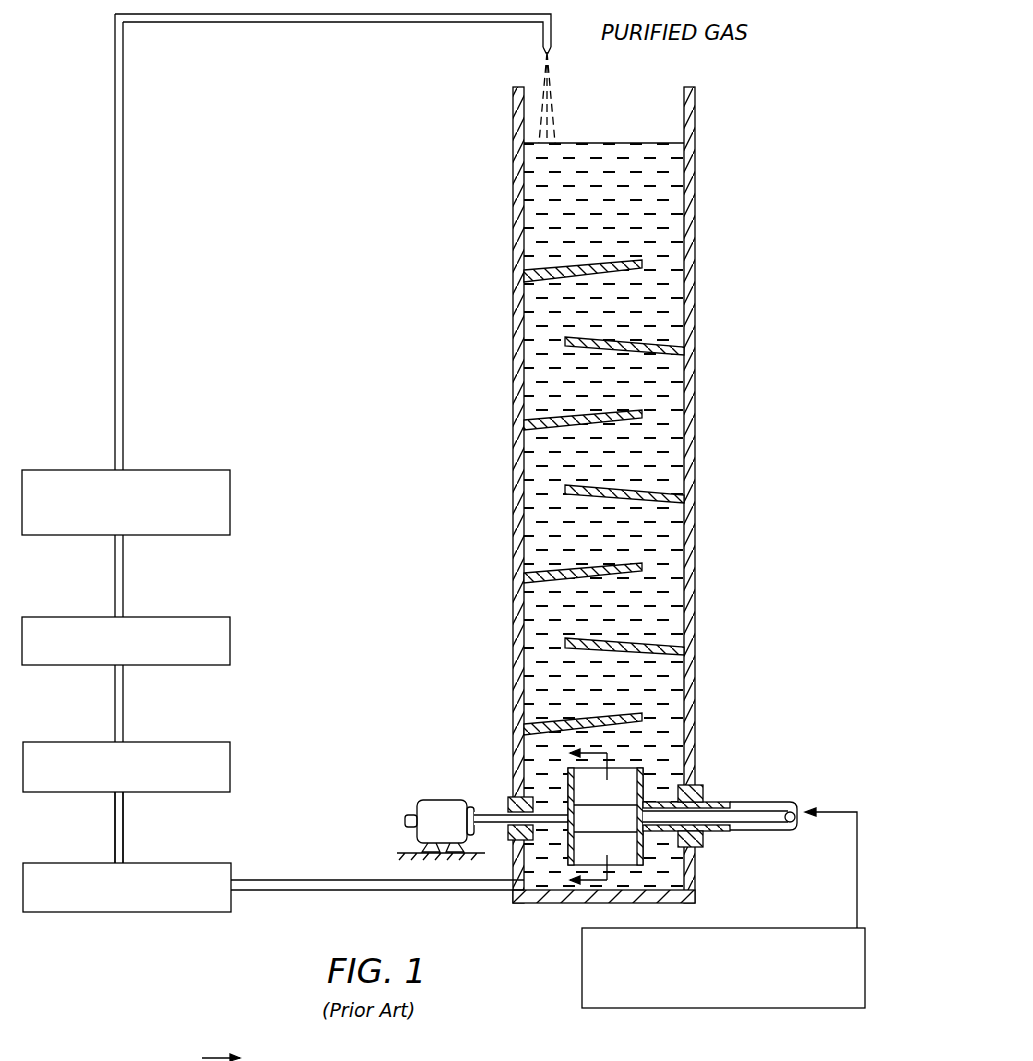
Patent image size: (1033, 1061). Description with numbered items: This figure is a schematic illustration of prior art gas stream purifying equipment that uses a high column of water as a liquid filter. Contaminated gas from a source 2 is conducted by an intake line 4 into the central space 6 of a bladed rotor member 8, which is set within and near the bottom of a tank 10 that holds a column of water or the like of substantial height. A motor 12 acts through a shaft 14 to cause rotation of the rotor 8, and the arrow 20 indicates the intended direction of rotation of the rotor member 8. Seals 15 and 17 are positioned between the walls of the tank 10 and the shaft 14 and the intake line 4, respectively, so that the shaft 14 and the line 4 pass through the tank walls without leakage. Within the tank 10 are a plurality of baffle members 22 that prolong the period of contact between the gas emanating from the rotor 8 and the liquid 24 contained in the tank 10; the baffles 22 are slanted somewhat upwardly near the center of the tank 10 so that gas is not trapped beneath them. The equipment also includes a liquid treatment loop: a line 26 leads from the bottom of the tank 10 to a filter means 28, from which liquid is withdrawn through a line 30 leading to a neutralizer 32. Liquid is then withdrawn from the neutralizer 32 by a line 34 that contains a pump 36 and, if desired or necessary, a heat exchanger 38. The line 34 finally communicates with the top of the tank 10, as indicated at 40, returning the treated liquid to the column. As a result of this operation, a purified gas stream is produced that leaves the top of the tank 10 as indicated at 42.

The source 2 is at (750, 1008).
The intake line 4 is at (757, 802).
The central space 6 is at (643, 790).
The bladed rotor member 8 is at (568, 796).
The tank 10 is at (513, 482).
The motor 12 is at (432, 800).
The shaft 14 is at (484, 814).
The seal 15 is at (508, 797).
The seal 17 is at (714, 774).
The arrow 20 is at (202, 1058).
The baffle members 22 is at (526, 274).
The liquid 24 is at (672, 222).
The line 26 is at (294, 880).
The filter means 28 is at (185, 863).
The line 30 is at (115, 826).
The neutralizer 32 is at (231, 767).
The line 34 is at (126, 376).
The pump 36 is at (231, 641).
The heat exchanger 38 is at (231, 503).
The top of tank communication point 40 is at (542, 62).
The purified gas stream outlet 42 is at (652, 105).